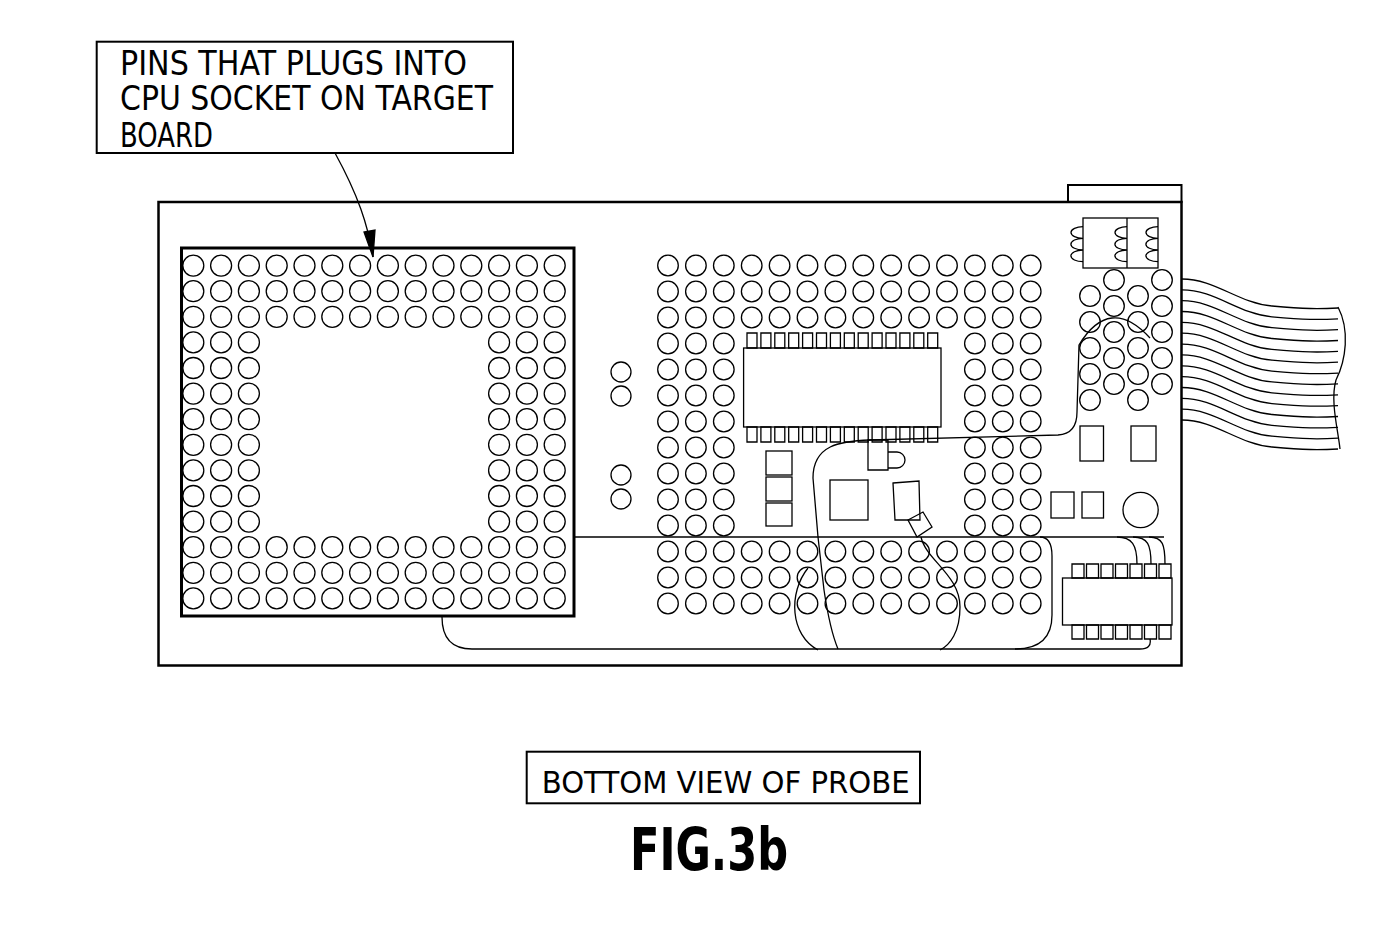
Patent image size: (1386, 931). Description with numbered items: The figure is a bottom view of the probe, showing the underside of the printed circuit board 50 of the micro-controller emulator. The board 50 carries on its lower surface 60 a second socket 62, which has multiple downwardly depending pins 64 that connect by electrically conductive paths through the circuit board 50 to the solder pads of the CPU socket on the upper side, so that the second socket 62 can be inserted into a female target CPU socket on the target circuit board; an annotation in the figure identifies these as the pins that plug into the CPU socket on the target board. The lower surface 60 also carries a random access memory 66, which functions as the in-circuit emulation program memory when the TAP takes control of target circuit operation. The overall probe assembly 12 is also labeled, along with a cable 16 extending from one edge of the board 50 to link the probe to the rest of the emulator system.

The probe 12 is at (615, 200).
The ribbon cable 16 is at (1257, 285).
The printed circuit board 50 is at (913, 666).
The lower surface 60 is at (723, 650).
The second socket 62 is at (205, 617).
The pins that plug into CPU socket 64 is at (285, 617).
The random access memory (RAM) 66 is at (855, 400).